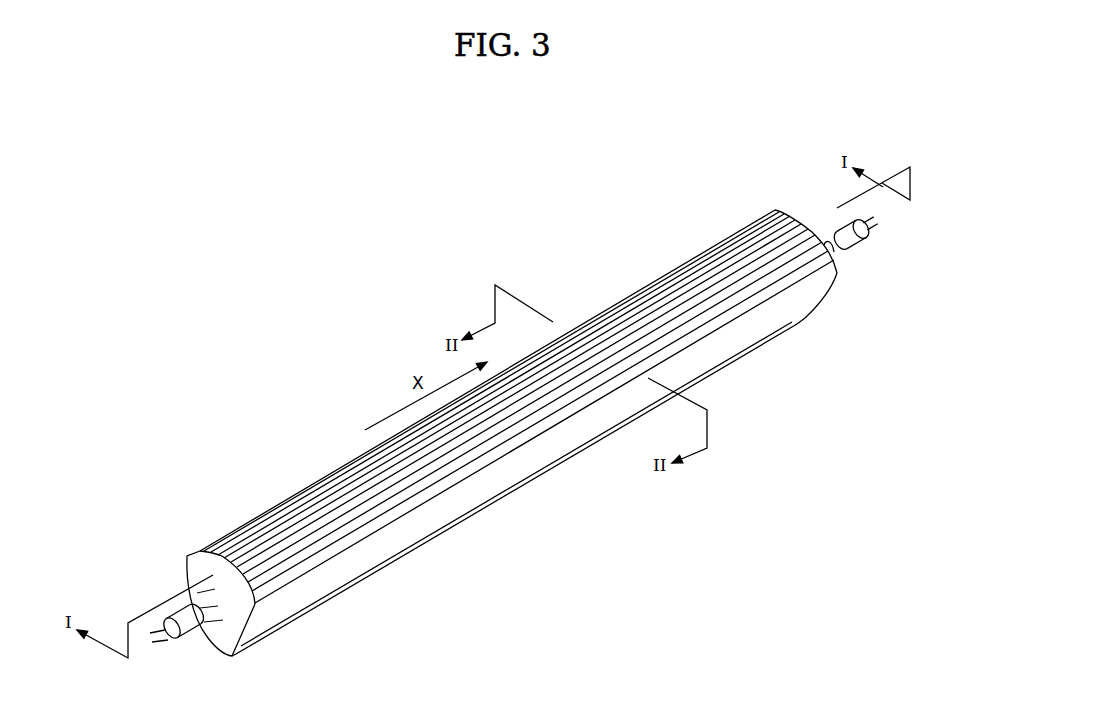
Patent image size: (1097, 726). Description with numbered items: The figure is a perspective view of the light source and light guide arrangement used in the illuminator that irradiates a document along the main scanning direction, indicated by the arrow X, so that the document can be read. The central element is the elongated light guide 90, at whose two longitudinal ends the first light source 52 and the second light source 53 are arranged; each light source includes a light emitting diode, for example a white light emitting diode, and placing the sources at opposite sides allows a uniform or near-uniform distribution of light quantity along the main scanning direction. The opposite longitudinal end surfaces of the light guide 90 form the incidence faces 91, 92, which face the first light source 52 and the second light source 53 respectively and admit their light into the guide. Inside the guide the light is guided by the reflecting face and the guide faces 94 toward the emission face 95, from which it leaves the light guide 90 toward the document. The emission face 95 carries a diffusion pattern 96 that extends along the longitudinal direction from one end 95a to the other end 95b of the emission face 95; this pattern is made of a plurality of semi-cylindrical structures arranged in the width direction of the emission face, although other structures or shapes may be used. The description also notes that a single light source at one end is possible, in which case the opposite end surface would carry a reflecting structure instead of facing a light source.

The light guide 90 is at (527, 507).
The incidence face 91 is at (196, 582).
The incidence face 92 is at (832, 288).
The guide face 94 is at (368, 556).
The emission face 95 is at (625, 288).
The one end of the emission face 95a is at (227, 550).
The other end of the emission face 95b is at (800, 212).
The diffusion pattern 96 is at (342, 492).
The first light source 52 is at (182, 638).
The second light source 53 is at (856, 247).